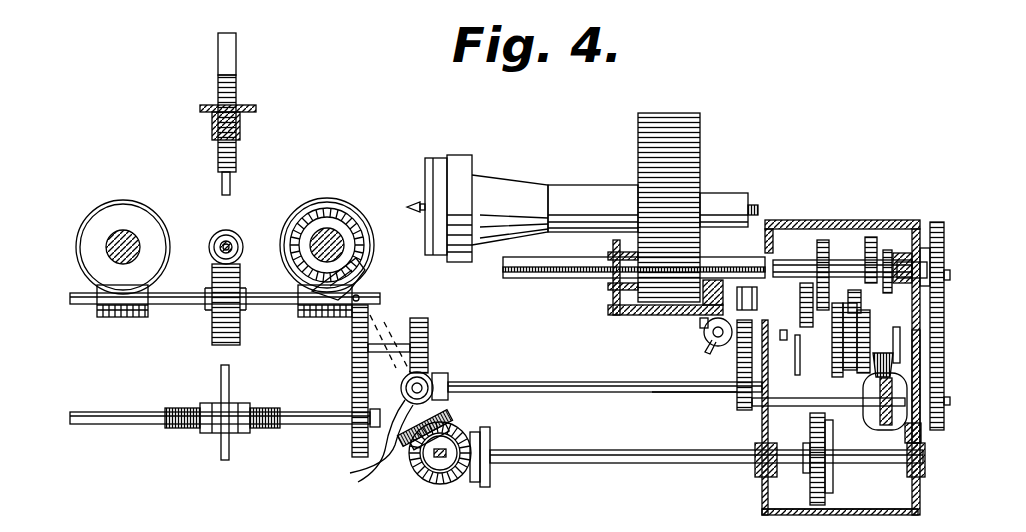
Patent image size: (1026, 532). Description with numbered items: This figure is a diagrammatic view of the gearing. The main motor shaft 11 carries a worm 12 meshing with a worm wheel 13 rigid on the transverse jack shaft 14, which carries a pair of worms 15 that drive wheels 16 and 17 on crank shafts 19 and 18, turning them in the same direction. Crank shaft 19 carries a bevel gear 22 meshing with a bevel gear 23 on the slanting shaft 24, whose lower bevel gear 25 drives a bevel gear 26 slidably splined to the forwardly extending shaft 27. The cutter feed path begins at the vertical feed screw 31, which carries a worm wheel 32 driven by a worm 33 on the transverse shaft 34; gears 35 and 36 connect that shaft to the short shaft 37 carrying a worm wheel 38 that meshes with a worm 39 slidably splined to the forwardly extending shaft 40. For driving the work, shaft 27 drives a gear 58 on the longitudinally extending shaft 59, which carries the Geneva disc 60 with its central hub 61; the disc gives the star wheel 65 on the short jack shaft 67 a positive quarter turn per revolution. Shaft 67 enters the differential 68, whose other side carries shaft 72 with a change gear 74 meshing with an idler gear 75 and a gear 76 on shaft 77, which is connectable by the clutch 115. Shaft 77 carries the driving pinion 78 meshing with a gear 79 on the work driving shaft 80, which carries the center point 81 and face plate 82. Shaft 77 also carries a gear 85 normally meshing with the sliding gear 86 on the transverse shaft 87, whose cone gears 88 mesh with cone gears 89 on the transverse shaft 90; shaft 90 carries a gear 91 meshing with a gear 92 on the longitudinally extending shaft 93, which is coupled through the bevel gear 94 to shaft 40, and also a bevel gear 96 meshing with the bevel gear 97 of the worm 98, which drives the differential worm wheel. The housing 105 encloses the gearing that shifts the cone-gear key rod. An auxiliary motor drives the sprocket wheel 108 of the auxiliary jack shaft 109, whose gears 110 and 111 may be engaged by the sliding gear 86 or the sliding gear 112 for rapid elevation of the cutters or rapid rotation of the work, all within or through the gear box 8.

The gear box 8 is at (920, 507).
The main motor shaft 11 is at (229, 244).
The worm 12 is at (208, 243).
The worm wheel 13 is at (240, 330).
The transverse jack shaft 14 is at (192, 306).
The worms 15 is at (136, 318).
The wheel 16 is at (360, 222).
The wheel 17 is at (132, 202).
The crank shaft 18 is at (120, 232).
The crank shaft 19 is at (322, 236).
The bevel gear 22 is at (316, 222).
The bevel gear 23 is at (370, 268).
The slanting shaft 24 is at (362, 296).
The bevel gear 25 is at (455, 422).
The bevel gear 26 is at (412, 468).
The forwardly extending shaft 27 is at (440, 462).
The vertical feed screw 31 is at (238, 157).
The worm wheel 32 is at (185, 430).
The worm 33 is at (215, 434).
The transverse shaft 34 is at (100, 412).
The gear 35 is at (355, 446).
The gear 36 is at (352, 362).
The short shaft 37 is at (395, 342).
The worm wheel 38 is at (430, 326).
The worm 39 is at (355, 476).
The forwardly extending shaft 40 is at (380, 462).
The gear 58 is at (492, 432).
The longitudinally extending shaft 59 is at (680, 464).
The disc 60 is at (808, 490).
The central hub 61 is at (800, 516).
The star wheel 65 is at (770, 408).
The short jack shaft 67 is at (737, 414).
The differential 68 is at (875, 425).
The shaft 72 is at (952, 401).
The change gear 74 is at (922, 435).
The idler gear 75 is at (930, 336).
The gear 76 is at (940, 222).
The shaft 77 is at (806, 282).
The driving pinion 78 is at (612, 298).
The gear 79 is at (664, 112).
The work driving shaft 80 is at (605, 178).
The center point 81 is at (412, 202).
The face plate 82 is at (440, 156).
The gear 85 is at (854, 288).
The sliding gear 86 is at (830, 350).
The transverse shaft 87 is at (798, 262).
The cone gears 88 is at (945, 300).
The cone gears 89 is at (835, 365).
The transverse shaft 90 is at (945, 318).
The gear 91 is at (708, 340).
The gear 92 is at (735, 395).
The longitudinally extending shaft 93 is at (625, 383).
The bevel gear 94 is at (444, 376).
The bevel gear 96 is at (902, 345).
The bevel gear 97 is at (895, 370).
The worm 98 is at (915, 420).
The housing 105 is at (700, 326).
The sprocket wheel 108 is at (730, 285).
The auxiliary jack shaft 109 is at (871, 236).
The gear 110 is at (823, 238).
The gear 111 is at (888, 248).
The sliding gear 112 is at (905, 252).
The clutch 115 is at (925, 250).